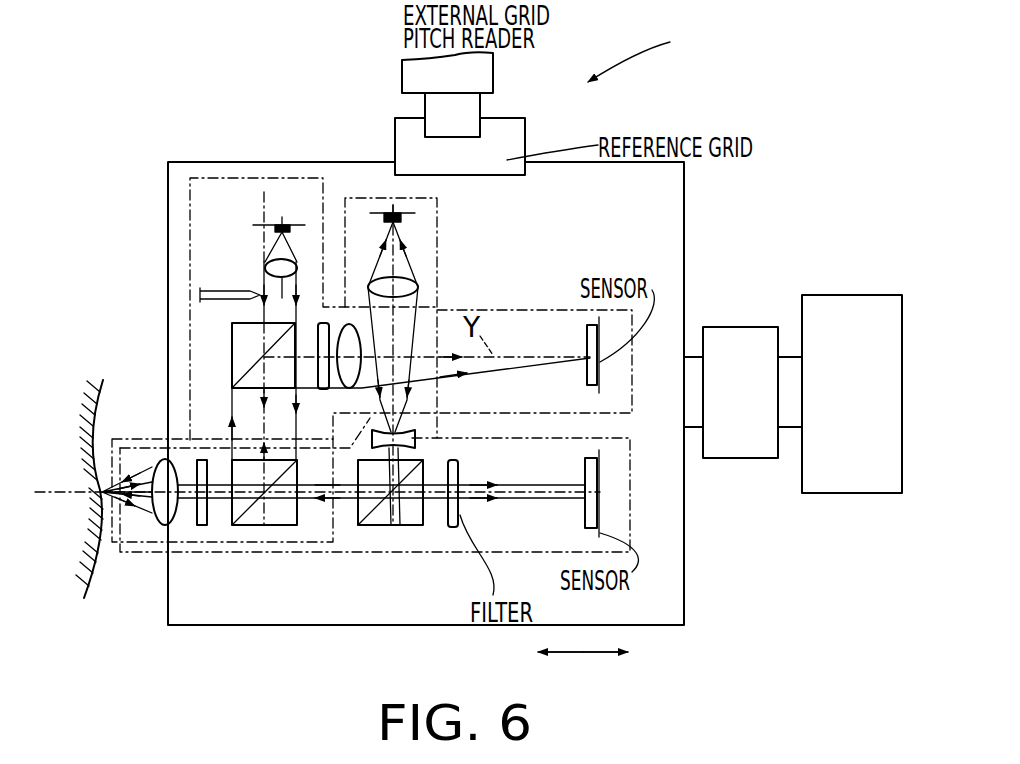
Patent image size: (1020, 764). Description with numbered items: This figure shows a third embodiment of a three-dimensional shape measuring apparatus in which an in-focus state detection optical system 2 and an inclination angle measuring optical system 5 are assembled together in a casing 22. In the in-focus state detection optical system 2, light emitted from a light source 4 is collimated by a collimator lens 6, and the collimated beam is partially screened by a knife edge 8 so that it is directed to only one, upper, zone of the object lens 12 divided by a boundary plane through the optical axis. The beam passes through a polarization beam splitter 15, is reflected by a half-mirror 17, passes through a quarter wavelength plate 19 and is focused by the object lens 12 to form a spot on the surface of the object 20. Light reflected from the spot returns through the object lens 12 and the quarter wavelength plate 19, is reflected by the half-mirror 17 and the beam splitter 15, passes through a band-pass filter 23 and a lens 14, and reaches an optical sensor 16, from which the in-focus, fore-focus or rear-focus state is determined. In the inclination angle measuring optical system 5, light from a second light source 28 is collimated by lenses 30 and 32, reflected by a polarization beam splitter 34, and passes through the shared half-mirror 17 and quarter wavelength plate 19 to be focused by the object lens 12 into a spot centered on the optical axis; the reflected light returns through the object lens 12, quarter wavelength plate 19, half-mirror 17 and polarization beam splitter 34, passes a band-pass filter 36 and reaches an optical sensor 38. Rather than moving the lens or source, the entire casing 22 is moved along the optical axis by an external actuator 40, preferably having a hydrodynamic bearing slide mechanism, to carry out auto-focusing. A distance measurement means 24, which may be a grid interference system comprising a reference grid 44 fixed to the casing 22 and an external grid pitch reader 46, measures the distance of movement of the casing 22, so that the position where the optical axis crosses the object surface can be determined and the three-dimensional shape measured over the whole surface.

The in-focus state detection optical system 2 is at (223, 170).
The light source 4 is at (284, 226).
The inclination angle measuring optical system 5 is at (374, 556).
The collimator lens 6 is at (264, 265).
The knife edge 8 is at (232, 291).
The object lens 12 is at (163, 462).
The lens 14 is at (349, 322).
The polarization beam splitter 15 is at (232, 338).
The optical sensor 16 is at (587, 343).
The half-mirror 17 is at (243, 468).
The quarter wavelength plate 19 is at (200, 460).
The object 20 is at (84, 573).
The casing 22 is at (168, 243).
The band-pass filter 23 is at (322, 322).
The distance measurement means 24 is at (582, 95).
The light source 28 is at (401, 220).
The lens 30 is at (418, 287).
The lens 32 is at (415, 436).
The polarization beam splitter 34 is at (405, 520).
The band-pass filter 36 is at (458, 515).
The optical sensor 38 is at (585, 515).
The actuator 40 is at (802, 277).
The reference grid 44 is at (517, 143).
The external grid pitch reader 46 is at (475, 108).